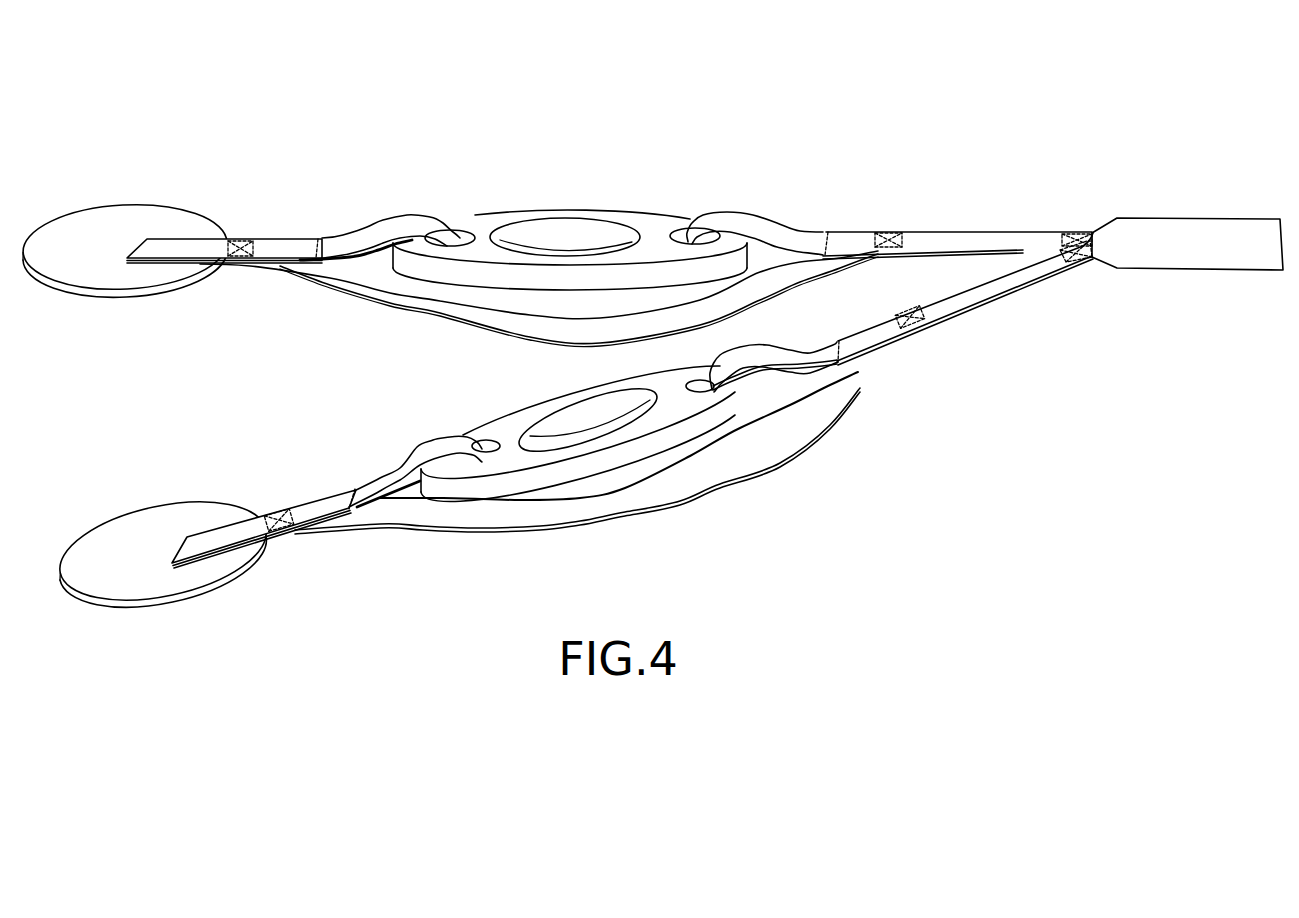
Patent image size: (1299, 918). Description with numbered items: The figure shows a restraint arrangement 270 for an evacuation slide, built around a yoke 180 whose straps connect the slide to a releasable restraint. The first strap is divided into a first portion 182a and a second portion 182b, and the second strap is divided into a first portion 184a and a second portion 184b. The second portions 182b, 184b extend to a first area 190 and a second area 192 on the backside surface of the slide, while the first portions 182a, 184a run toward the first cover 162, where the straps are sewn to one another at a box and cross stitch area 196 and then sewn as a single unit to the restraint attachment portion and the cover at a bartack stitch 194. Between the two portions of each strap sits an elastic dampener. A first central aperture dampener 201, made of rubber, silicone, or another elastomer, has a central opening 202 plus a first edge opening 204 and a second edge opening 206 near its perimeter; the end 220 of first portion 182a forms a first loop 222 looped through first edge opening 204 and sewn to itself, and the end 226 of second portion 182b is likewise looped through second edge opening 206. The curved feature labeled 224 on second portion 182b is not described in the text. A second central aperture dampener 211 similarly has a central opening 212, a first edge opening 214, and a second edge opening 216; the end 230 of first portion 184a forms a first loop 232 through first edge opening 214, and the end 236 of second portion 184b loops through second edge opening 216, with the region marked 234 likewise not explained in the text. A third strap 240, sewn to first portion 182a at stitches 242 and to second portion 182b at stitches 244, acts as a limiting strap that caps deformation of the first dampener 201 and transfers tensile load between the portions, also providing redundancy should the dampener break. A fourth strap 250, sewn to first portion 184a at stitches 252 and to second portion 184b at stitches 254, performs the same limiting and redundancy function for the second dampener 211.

The first cover 162 is at (1160, 225).
The yoke 180 is at (900, 143).
The first portion of first strap 182a is at (855, 235).
The second portion of first strap 182b is at (292, 245).
The first portion of second strap 184a is at (965, 300).
The second portion of second strap 184b is at (308, 512).
The first area 190 is at (127, 215).
The second area 192 is at (165, 522).
The bartack stitch 194 is at (1093, 233).
The box and cross stitch area 196 is at (1082, 254).
The first central aperture dampener 201 is at (512, 210).
The central opening 202 is at (591, 230).
The first edge opening 204 is at (683, 230).
The second edge opening 206 is at (458, 229).
The second central aperture dampener 211 is at (525, 410).
The central opening 212 is at (577, 417).
The first edge opening 214 is at (699, 369).
The second edge opening 216 is at (484, 434).
The end of first portion 220 is at (797, 233).
The first loop 222 is at (770, 266).
The second curved portion 224 is at (333, 243).
The end of second portion 226 is at (385, 271).
The end of first portion 230 is at (827, 353).
The first loop 232 is at (785, 385).
The second curved portion of second electrode 234 is at (370, 490).
The end of second portion 236 is at (416, 504).
The third strap 240 is at (460, 310).
The stitches 242 is at (898, 233).
The stitches 244 is at (248, 253).
The fourth strap 250 is at (497, 528).
The stitches 252 is at (912, 332).
The stitches 254 is at (273, 513).
The restraint arrangement 270 is at (668, 135).